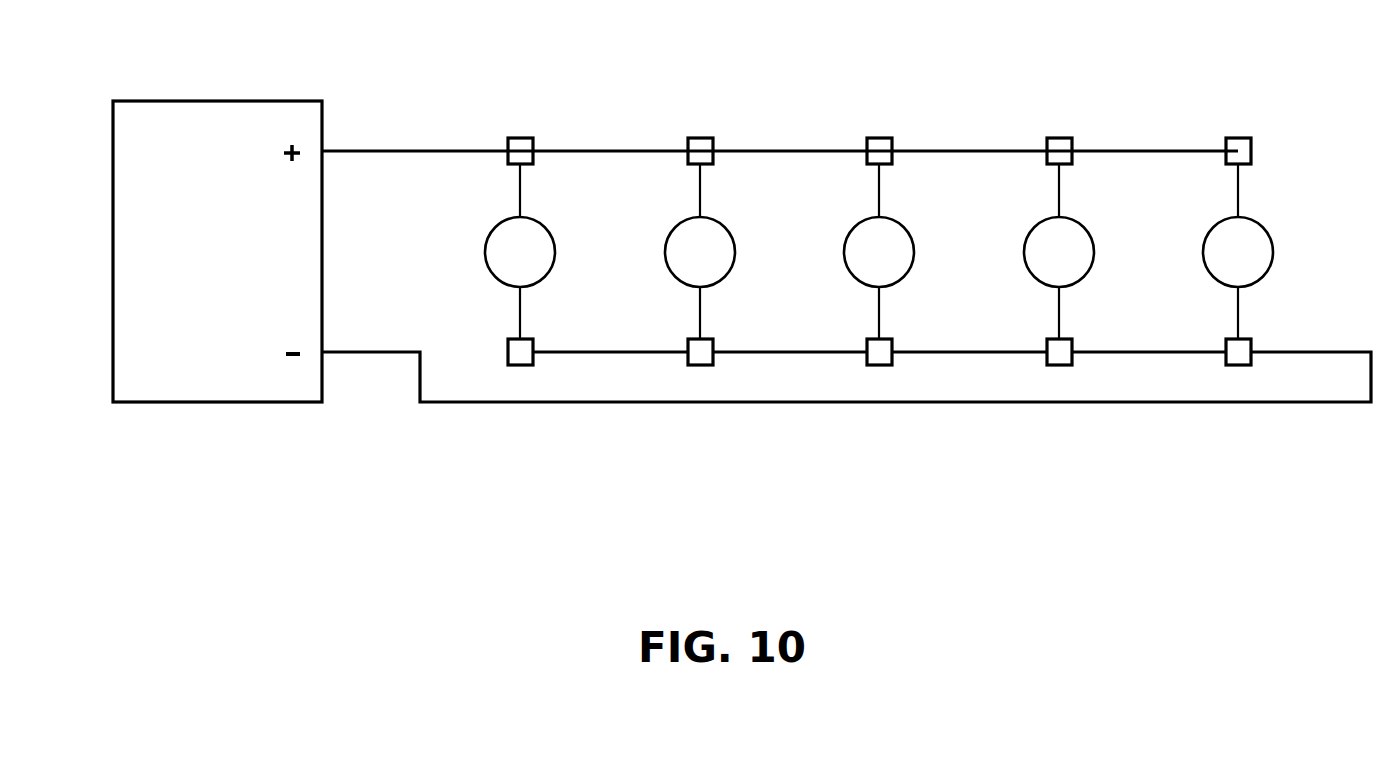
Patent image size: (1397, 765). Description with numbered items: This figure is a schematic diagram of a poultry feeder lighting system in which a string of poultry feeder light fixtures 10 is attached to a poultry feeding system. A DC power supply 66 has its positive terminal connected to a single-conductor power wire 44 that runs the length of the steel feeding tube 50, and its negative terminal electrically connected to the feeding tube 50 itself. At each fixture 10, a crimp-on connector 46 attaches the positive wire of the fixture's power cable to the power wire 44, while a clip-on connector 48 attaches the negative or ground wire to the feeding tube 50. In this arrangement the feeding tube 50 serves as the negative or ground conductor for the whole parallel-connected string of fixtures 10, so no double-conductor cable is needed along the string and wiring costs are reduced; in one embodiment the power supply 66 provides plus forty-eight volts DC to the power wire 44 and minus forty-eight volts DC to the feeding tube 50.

The DC power supply 66 is at (215, 100).
The power wire 44 is at (425, 148).
The crimp-on connector 46 is at (533, 139).
The poultry feeder light fixture 10 is at (549, 237).
The clip-on connector 48 is at (533, 340).
The feeding tube 50 is at (815, 403).